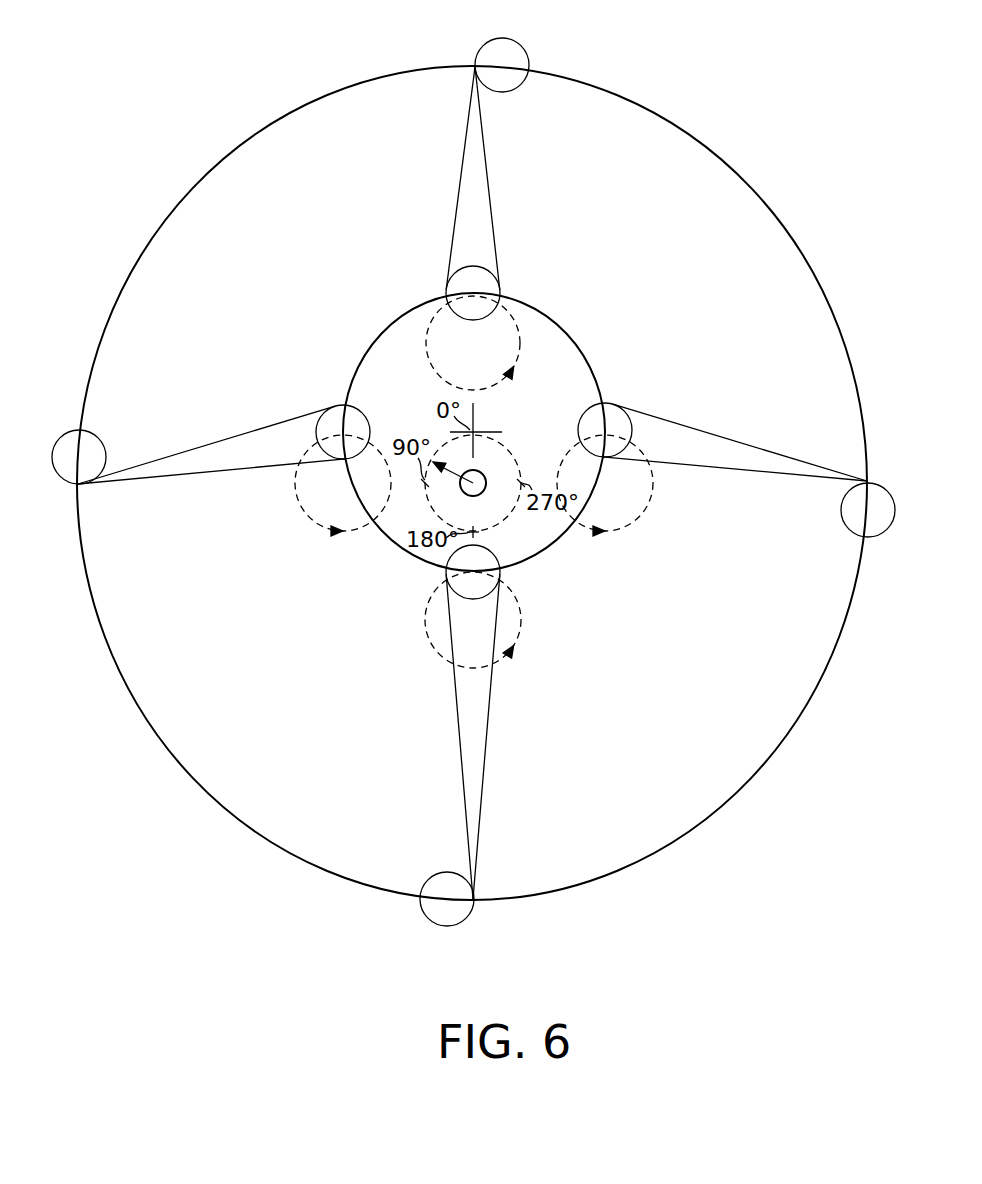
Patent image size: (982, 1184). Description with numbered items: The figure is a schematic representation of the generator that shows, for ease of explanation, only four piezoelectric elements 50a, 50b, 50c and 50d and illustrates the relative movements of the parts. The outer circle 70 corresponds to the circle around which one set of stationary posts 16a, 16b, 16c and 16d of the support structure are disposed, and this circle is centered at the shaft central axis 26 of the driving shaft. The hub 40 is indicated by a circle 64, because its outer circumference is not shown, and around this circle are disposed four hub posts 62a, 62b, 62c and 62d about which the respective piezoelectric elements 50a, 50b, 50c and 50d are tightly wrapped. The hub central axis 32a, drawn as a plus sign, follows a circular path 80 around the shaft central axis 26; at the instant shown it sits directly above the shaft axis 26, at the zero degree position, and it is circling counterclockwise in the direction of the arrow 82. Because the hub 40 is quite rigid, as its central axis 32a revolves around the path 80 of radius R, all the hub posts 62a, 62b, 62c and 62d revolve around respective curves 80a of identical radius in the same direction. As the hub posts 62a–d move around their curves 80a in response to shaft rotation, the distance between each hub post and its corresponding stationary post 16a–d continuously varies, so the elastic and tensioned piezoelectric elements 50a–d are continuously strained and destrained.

The stationary post 16a is at (520, 44).
The stationary post 16b is at (847, 518).
The stationary post 16c is at (434, 875).
The stationary post 16d is at (91, 444).
The shaft central axis 26 is at (486, 480).
The hub central axis 32a is at (477, 428).
The hub 40 is at (407, 380).
The piezoelectric element 50a is at (533, 146).
The piezoelectric element 50b is at (704, 428).
The piezoelectric element 50c is at (552, 749).
The piezoelectric element 50d is at (184, 451).
The hub post 62a is at (472, 273).
The hub post 62b is at (612, 408).
The hub post 62c is at (486, 562).
The hub post 62d is at (335, 416).
The hub circle 64 is at (553, 311).
The outer circle 70 is at (746, 176).
The circular path 80 is at (513, 512).
The curve 80a is at (518, 330).
The arrow 82 is at (480, 535).